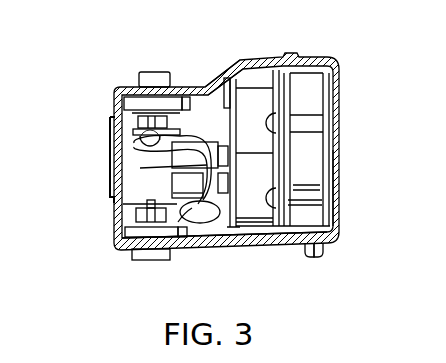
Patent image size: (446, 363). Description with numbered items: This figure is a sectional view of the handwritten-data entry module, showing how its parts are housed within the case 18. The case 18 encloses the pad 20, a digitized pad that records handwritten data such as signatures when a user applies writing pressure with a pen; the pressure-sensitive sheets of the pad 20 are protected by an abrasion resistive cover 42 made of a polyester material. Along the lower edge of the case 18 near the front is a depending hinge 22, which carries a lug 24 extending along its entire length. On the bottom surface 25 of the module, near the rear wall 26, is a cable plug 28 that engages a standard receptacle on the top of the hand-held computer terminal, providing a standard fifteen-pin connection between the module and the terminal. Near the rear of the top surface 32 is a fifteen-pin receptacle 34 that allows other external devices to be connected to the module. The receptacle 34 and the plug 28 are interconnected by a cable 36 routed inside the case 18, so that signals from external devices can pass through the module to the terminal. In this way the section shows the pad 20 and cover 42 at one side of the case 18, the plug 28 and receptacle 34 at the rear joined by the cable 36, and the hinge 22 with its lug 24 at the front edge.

The case 18 is at (256, 62).
The pad 20 is at (341, 107).
The hinge 22 is at (321, 254).
The lug 24 is at (305, 251).
The bottom surface 25 is at (236, 243).
The rear wall 26 is at (108, 129).
The cable plug 28 is at (143, 262).
The top surface 32 is at (198, 86).
The receptacle 34 is at (152, 71).
The cable 36 is at (112, 180).
The abrasion resistive cover 42 is at (339, 171).